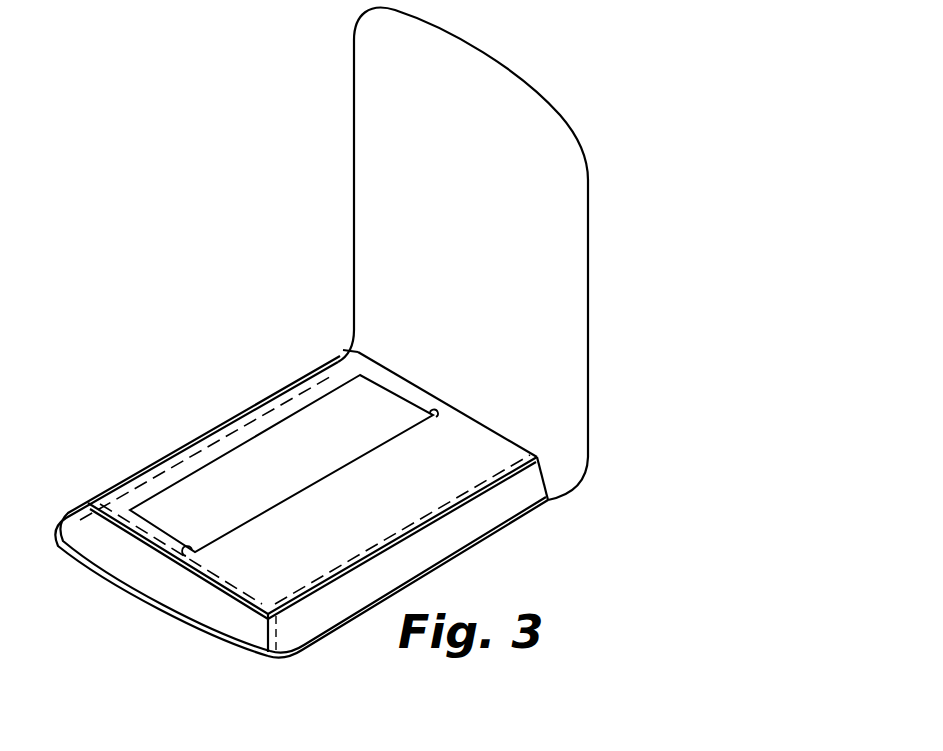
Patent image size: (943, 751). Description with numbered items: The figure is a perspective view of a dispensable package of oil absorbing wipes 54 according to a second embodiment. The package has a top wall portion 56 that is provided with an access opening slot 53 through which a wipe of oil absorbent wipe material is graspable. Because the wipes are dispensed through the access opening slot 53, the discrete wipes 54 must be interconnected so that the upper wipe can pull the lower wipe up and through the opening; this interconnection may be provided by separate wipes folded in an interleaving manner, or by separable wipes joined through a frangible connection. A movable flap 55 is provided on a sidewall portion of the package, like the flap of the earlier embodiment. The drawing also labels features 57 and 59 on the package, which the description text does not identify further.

The access opening slot 53 is at (187, 560).
The oil absorbing wipes 54 is at (292, 415).
The movable flap 55 is at (575, 293).
The top wall portion 56 is at (483, 442).
The lip 57 is at (105, 560).
The bottom edge 59 is at (483, 540).